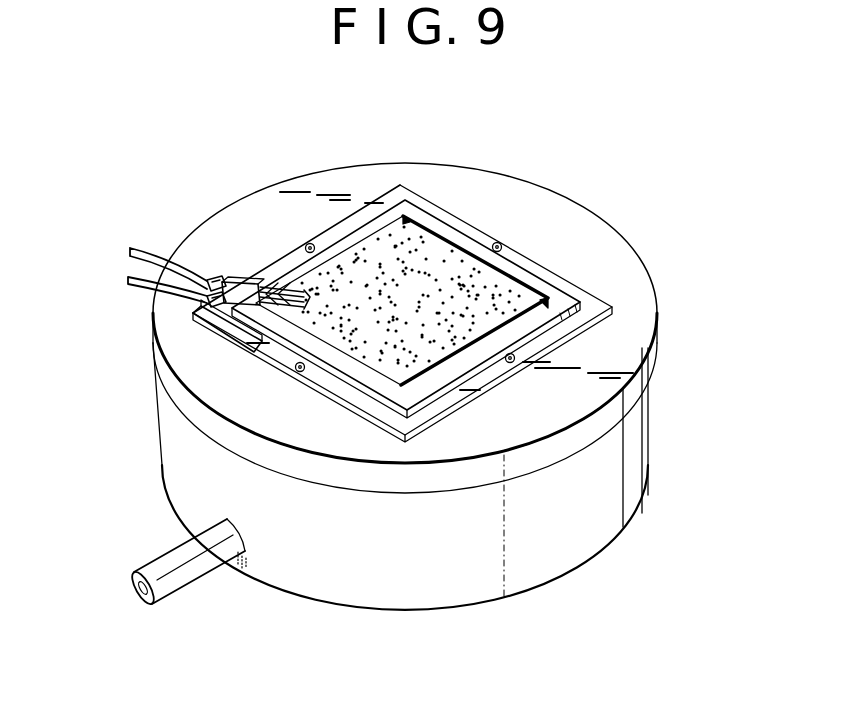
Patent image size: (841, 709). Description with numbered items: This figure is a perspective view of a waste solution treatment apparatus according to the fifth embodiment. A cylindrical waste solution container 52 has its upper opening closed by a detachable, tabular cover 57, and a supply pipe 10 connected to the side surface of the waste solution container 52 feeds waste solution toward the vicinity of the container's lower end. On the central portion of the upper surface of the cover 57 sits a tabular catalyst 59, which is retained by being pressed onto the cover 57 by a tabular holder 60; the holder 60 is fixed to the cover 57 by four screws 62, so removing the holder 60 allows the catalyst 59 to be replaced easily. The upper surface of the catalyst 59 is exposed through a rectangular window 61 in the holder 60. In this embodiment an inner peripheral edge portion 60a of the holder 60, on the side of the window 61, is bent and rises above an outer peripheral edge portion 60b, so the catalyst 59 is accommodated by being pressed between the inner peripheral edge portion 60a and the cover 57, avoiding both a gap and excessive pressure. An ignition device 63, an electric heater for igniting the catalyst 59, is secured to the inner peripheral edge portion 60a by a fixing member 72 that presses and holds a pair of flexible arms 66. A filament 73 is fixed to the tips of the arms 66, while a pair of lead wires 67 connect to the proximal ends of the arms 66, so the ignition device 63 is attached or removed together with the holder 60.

The supply pipe 10 is at (191, 574).
The waste solution container 52 is at (570, 555).
The cover 57 is at (587, 258).
The catalyst 59 is at (455, 292).
The holder 60 is at (471, 388).
The inner peripheral edge portion 60a is at (377, 198).
The outer peripheral edge portion 60b is at (468, 390).
The rectangular window 61 is at (560, 288).
The screws 62 is at (540, 352).
The ignition device 63 is at (117, 294).
The arms 66 is at (222, 325).
The lead wires 67 is at (143, 291).
The fixing member 72 is at (255, 280).
The filament 73 is at (306, 302).